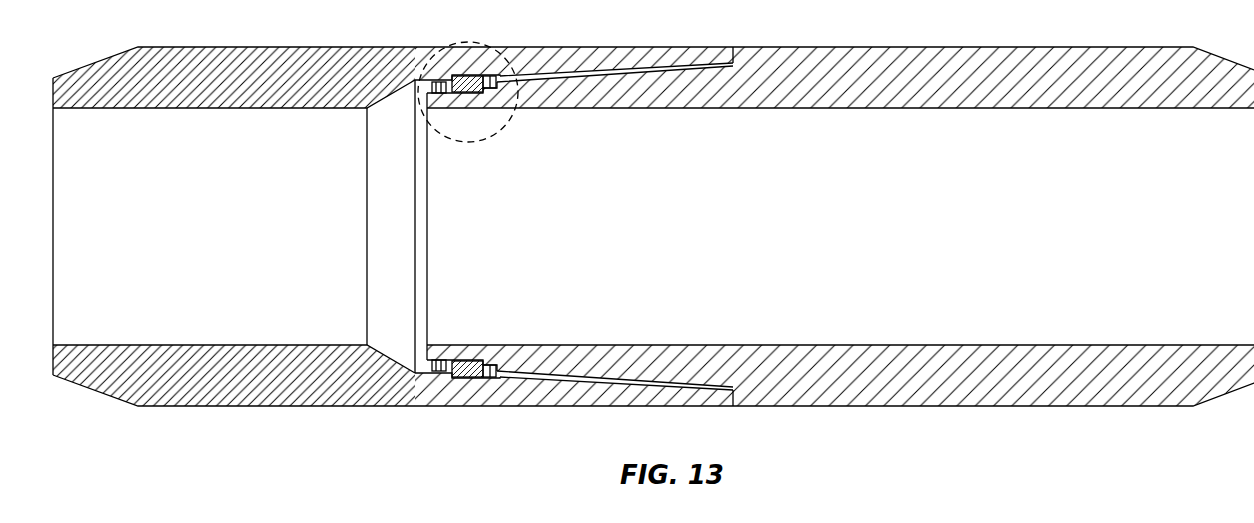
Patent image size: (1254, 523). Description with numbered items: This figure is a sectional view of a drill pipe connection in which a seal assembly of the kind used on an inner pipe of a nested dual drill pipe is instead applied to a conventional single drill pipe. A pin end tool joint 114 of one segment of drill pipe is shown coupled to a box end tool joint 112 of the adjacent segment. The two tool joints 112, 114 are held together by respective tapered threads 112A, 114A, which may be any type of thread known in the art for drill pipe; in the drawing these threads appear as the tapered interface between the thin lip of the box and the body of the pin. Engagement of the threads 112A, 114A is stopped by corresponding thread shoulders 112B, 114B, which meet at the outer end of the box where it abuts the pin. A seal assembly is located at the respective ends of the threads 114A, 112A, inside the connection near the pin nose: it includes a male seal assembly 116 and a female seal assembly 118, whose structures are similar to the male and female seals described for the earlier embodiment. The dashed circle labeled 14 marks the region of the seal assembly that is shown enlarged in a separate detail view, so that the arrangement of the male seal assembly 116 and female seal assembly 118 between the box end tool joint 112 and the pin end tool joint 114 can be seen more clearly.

The seal detail region 14 is at (493, 137).
The box end tool joint 112 is at (393, 247).
The tapered thread 112A is at (623, 383).
The thread shoulder 112B is at (733, 410).
The pin end tool joint 114 is at (840, 247).
The tapered thread 114A is at (650, 380).
The thread shoulder 114B is at (737, 410).
The male seal assembly 116 is at (440, 370).
The female seal assembly 118 is at (452, 370).